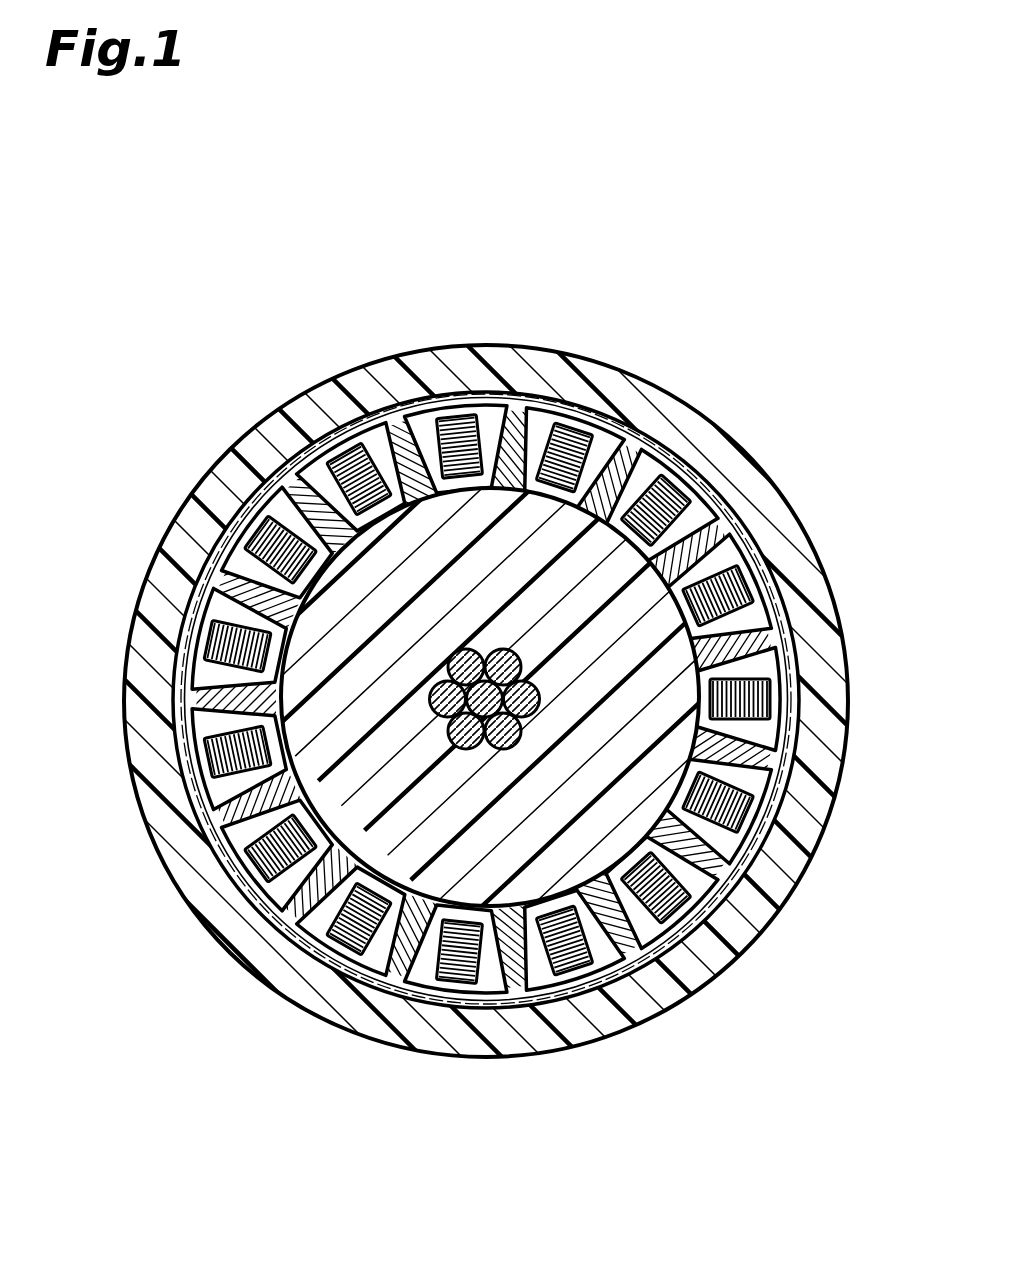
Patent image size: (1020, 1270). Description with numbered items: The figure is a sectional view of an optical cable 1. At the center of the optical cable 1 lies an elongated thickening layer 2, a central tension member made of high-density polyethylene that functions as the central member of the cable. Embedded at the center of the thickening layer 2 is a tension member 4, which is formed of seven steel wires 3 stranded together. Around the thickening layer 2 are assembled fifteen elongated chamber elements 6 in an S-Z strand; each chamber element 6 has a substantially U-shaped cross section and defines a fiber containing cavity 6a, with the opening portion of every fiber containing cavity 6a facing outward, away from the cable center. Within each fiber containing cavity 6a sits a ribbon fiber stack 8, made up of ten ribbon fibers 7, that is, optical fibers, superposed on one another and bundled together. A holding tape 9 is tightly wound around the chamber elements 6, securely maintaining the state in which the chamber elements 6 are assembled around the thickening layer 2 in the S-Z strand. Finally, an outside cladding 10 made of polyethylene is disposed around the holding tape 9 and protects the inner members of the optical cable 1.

The optical cable 1 is at (537, 330).
The thickening layer 2 is at (600, 583).
The steel wire 3 is at (503, 738).
The tension member 4 is at (514, 749).
The chamber element 6 is at (617, 447).
The fiber containing cavity 6a is at (549, 420).
The ribbon fiber 7 is at (780, 703).
The ribbon fiber stack 8 is at (752, 618).
The holding tape 9 is at (733, 890).
The outside cladding 10 is at (160, 788).